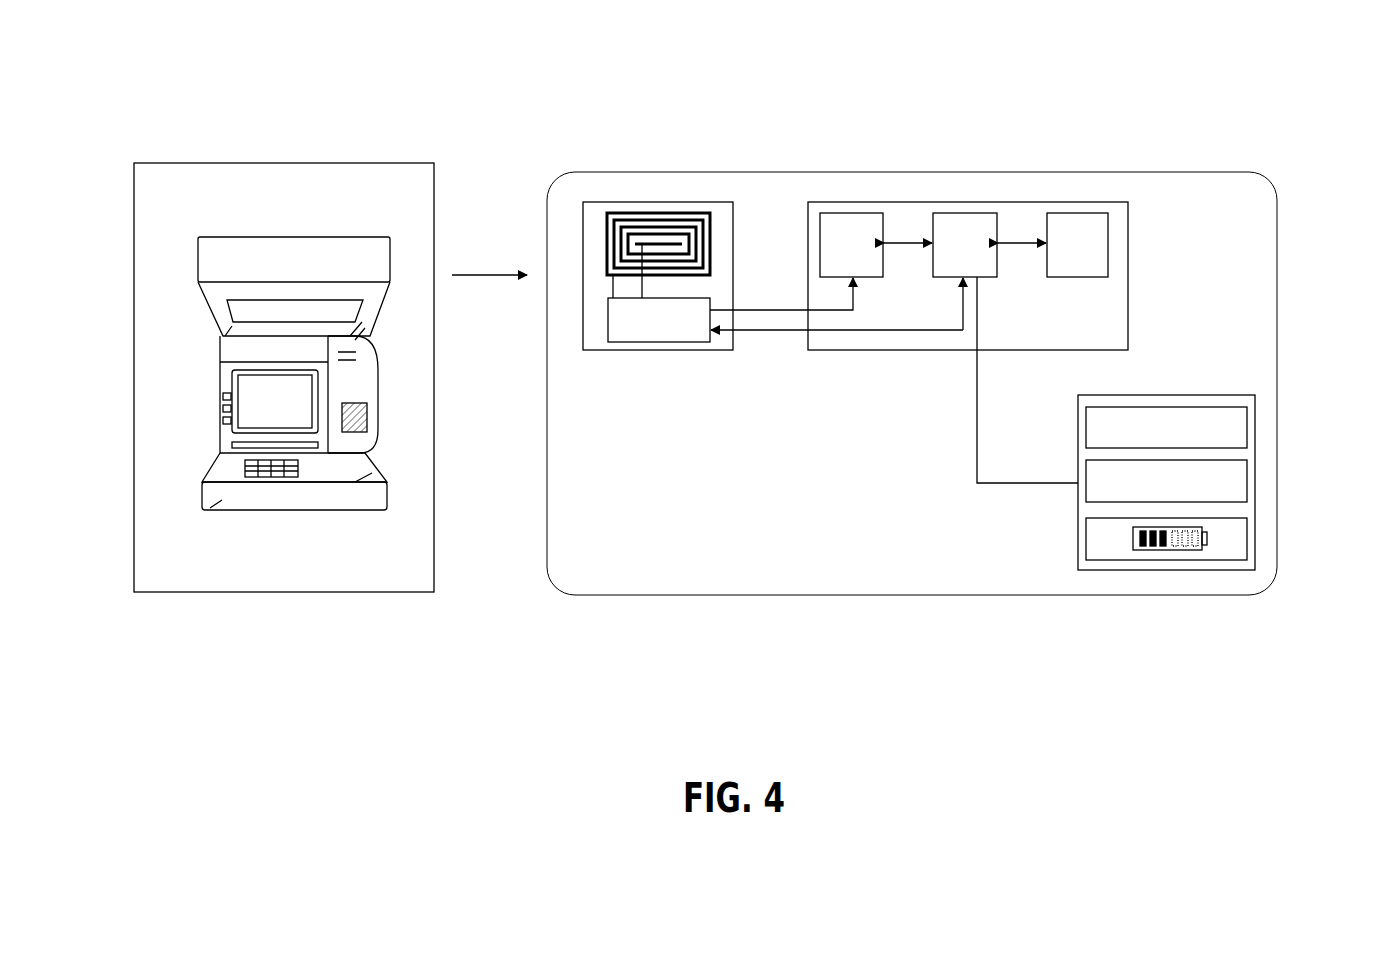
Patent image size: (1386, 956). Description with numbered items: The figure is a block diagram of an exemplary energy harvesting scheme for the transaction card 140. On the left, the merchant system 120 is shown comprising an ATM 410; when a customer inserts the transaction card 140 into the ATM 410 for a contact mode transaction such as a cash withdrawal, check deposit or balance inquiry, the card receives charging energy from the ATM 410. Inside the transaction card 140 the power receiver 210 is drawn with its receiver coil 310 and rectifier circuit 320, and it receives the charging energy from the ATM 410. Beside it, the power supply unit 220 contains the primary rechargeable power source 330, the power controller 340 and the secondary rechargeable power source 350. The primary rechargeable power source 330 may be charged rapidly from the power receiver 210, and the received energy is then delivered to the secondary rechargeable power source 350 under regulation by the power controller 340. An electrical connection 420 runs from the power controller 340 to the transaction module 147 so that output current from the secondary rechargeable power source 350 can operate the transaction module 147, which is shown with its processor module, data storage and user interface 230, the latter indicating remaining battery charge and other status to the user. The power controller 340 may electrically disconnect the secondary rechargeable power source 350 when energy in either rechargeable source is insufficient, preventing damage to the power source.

The merchant system 120 is at (208, 163).
The ATM 410 is at (312, 232).
The transaction card 140 is at (1220, 173).
The power receiver 210 is at (622, 198).
The receiver coil 310 is at (658, 212).
The rectifier circuit 320 is at (675, 342).
The power supply unit 220 is at (1123, 200).
The primary rechargeable power source 330 is at (850, 212).
The power controller 340 is at (962, 212).
The secondary rechargeable power source 350 is at (1080, 212).
The electrical connection 420 is at (995, 483).
The transaction module 147 is at (1255, 425).
The user interface 230 is at (1255, 537).